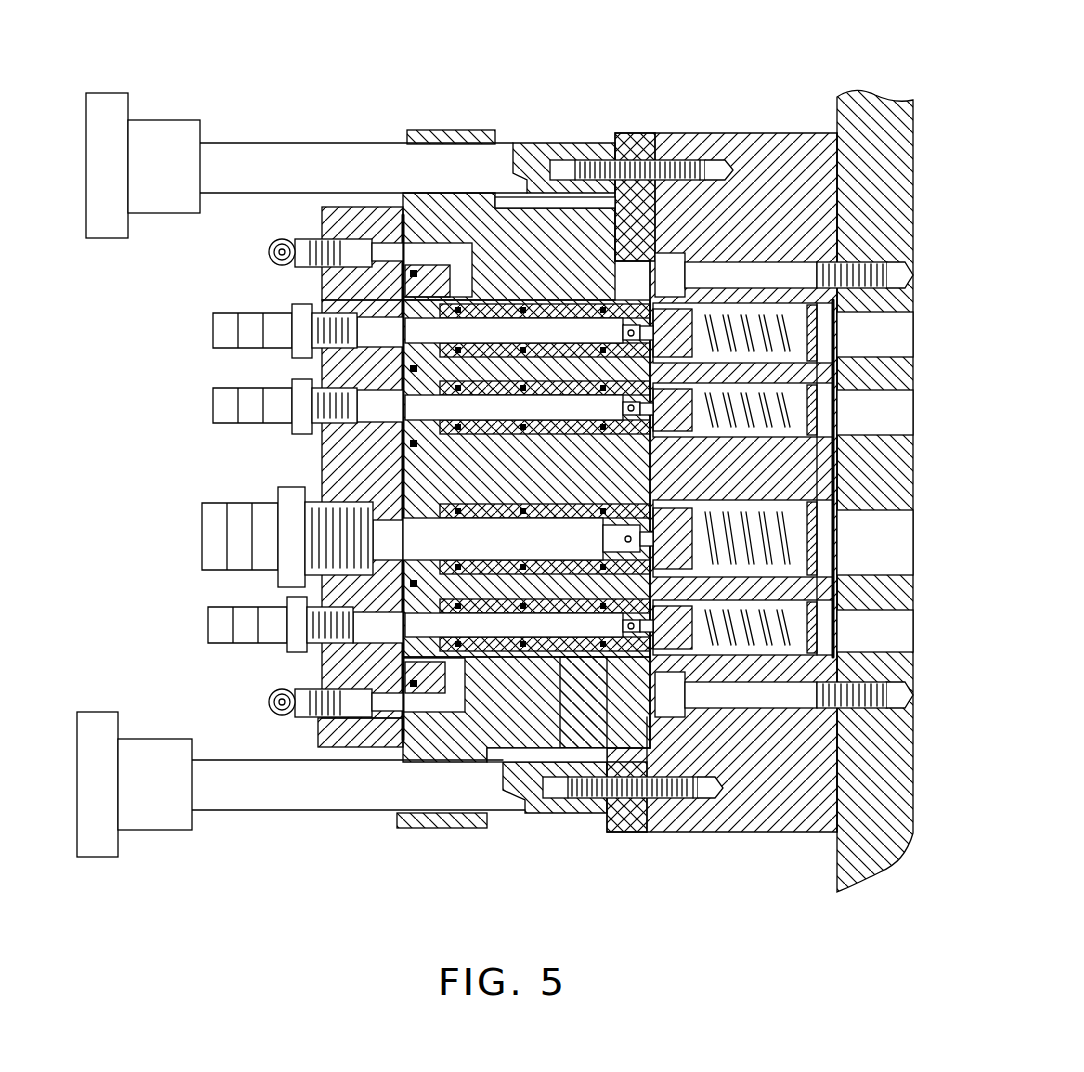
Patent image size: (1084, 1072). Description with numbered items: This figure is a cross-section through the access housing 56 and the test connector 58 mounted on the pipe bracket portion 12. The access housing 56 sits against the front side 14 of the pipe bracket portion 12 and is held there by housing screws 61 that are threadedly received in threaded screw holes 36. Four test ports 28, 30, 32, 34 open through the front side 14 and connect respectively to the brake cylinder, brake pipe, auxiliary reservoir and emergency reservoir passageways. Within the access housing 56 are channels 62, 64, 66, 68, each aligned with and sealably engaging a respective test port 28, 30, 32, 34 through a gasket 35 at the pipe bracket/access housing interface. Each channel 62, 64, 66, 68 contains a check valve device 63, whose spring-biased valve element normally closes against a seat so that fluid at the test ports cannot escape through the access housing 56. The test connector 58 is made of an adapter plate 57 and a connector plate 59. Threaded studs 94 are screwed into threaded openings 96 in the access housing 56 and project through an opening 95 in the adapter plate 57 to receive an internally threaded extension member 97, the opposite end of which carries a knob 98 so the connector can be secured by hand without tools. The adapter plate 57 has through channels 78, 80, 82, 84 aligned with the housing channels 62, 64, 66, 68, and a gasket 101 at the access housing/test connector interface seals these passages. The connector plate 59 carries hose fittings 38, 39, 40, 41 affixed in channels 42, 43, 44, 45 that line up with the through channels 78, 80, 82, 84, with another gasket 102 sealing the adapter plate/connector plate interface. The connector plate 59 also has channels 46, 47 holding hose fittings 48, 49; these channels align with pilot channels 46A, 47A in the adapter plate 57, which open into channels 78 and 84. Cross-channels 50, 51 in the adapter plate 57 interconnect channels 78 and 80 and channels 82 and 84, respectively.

The pipe bracket portion 12 is at (875, 140).
The front side 14 is at (836, 140).
The test port 28 is at (875, 631).
The test port 30 is at (875, 542).
The test port 32 is at (875, 412).
The test port 34 is at (875, 334).
The gasket 35 is at (836, 468).
The threaded screw holes 36 is at (866, 262).
The hose fitting 38 is at (207, 625).
The hose fitting 39 is at (200, 537).
The hose fitting 40 is at (212, 405).
The hose fitting 41 is at (212, 330).
The channel 42 is at (378, 627).
The channel 43 is at (400, 538).
The channel 44 is at (380, 406).
The channel 45 is at (380, 332).
The channel 46 is at (385, 720).
The pilot channel 46A is at (452, 705).
The channel 47 is at (385, 245).
The pilot channel 47A is at (455, 260).
The hose fitting 48 is at (268, 702).
The hose fitting 49 is at (268, 252).
The cross-channel 50 is at (455, 572).
The cross-channel 51 is at (465, 420).
The access housing 56 is at (768, 132).
The adapter plate 57 is at (462, 190).
The test connector 58 is at (425, 125).
The connector plate 59 is at (365, 205).
The housing screws 61 is at (772, 275).
The housing channel 62 is at (743, 627).
The check valve device 63 is at (680, 300).
The housing channel 64 is at (743, 538).
The housing channel 66 is at (743, 410).
The housing channel 68 is at (743, 333).
The through channel 78 is at (594, 702).
The through channel 80 is at (565, 440).
The through channel 82 is at (645, 440).
The through channel 84 is at (526, 459).
The threaded studs 94 is at (600, 160).
The opening 95 is at (640, 158).
The threaded openings 96 is at (692, 165).
The extension member 97 is at (263, 160).
The knob 98 is at (118, 108).
The gasket 101 is at (635, 300).
The gasket 102 is at (360, 470).